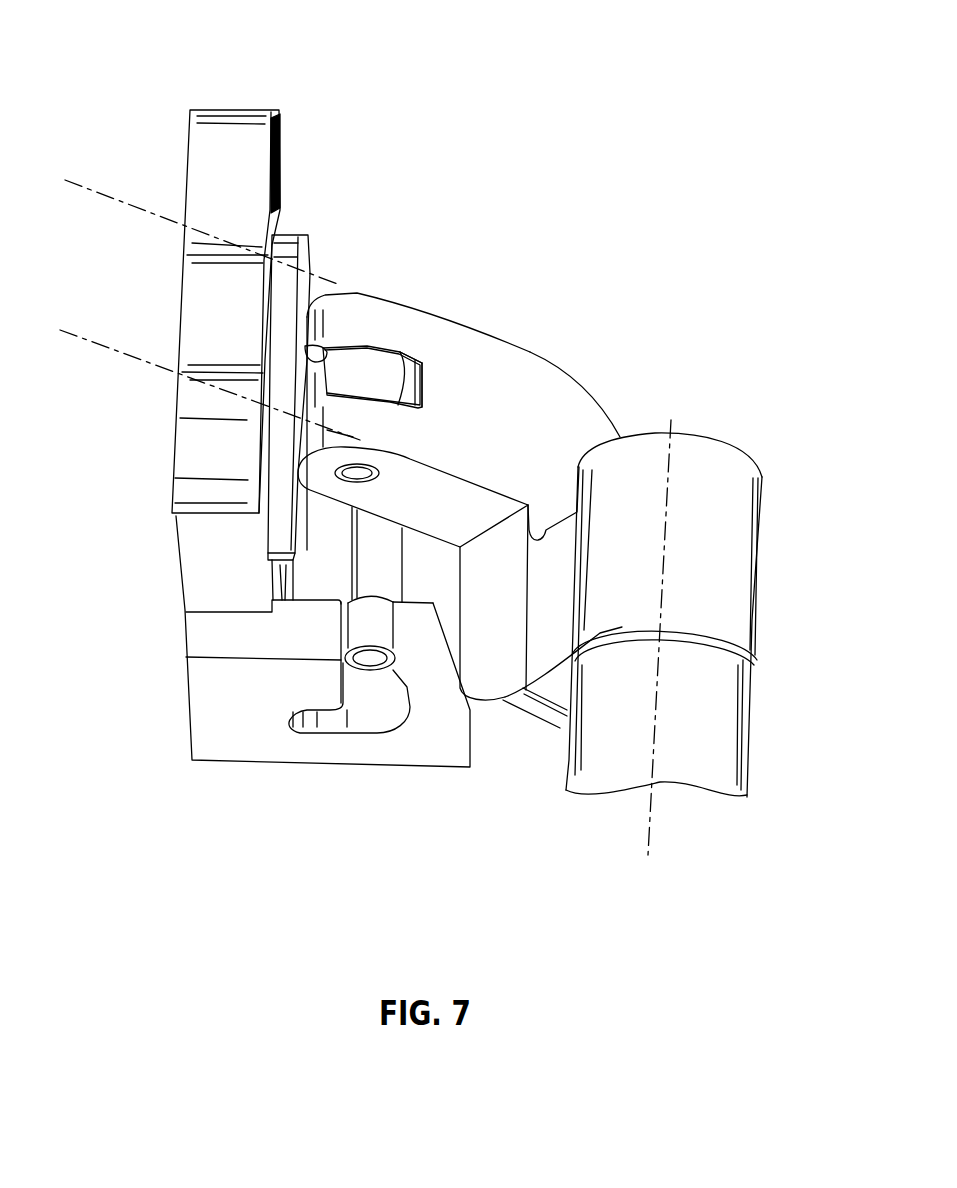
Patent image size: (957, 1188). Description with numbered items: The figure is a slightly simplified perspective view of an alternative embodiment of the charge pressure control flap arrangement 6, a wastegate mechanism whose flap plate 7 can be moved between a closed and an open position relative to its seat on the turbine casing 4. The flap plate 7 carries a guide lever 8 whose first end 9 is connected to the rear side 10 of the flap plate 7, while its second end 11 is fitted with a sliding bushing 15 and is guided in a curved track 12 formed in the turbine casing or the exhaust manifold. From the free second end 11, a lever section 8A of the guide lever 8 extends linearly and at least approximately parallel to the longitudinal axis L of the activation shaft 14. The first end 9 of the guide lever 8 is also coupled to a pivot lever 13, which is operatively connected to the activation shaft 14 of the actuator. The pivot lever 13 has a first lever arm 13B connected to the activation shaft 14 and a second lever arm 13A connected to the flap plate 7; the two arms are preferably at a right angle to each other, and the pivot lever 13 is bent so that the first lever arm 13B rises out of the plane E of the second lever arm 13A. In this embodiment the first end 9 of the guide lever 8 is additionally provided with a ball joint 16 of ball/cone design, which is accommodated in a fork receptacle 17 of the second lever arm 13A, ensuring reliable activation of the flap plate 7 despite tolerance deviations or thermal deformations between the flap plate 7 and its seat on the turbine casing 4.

The turbine casing 4 is at (228, 130).
The charge pressure control flap arrangement 6 is at (608, 383).
The flap plate 7 is at (303, 229).
The guide lever 8 is at (347, 533).
The lever section 8A is at (362, 560).
The first end 9 is at (368, 377).
The rear side 10 is at (308, 282).
The second end 11 is at (370, 660).
The curved track 12 is at (310, 737).
The pivot lever 13 is at (673, 393).
The second lever arm 13A is at (518, 368).
The first lever arm 13B is at (732, 558).
The activation shaft 14 is at (723, 750).
The sliding bushing 15 is at (360, 632).
The ball joint 16 is at (372, 376).
The fork receptacle 17 is at (423, 387).
The plane E is at (145, 283).
The longitudinal axis L is at (652, 797).